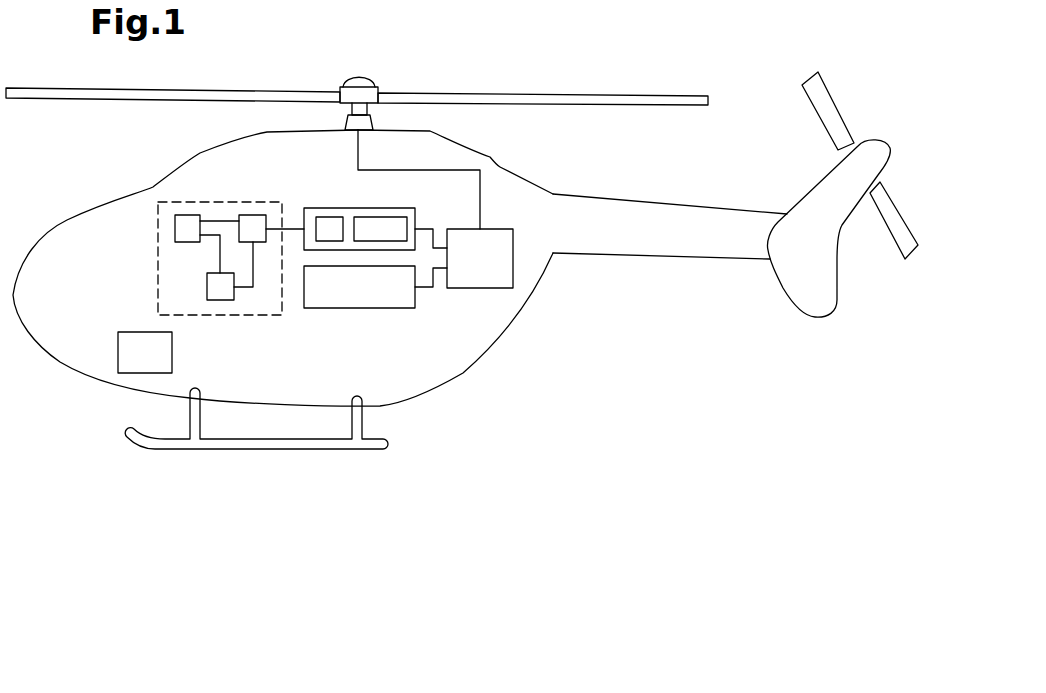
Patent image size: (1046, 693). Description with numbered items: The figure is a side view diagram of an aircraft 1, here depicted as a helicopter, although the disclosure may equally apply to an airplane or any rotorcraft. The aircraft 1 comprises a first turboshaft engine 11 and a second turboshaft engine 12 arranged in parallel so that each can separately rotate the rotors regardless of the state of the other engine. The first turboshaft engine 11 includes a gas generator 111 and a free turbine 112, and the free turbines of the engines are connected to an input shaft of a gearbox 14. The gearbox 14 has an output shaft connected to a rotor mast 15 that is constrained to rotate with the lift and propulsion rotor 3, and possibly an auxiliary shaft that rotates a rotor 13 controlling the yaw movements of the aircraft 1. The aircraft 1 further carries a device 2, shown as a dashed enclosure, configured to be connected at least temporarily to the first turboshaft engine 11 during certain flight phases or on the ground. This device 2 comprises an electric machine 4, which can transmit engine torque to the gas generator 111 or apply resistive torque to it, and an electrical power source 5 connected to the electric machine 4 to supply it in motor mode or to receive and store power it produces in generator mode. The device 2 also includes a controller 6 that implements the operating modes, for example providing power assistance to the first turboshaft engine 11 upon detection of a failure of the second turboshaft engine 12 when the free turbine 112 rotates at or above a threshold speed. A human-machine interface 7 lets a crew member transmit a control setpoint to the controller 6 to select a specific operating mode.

The aircraft 1 is at (523, 318).
The device 2 is at (263, 317).
The lift and propulsion rotor 3 is at (392, 83).
The electric machine 4 is at (248, 222).
The electrical power source 5 is at (218, 292).
The controller 6 is at (182, 227).
The human-machine interface 7 is at (128, 354).
The first turboshaft engine 11 is at (325, 208).
The second turboshaft engine 12 is at (358, 297).
The rotor controlling yaw movements 13 is at (822, 108).
The gearbox 14 is at (487, 278).
The rotor mast 15 is at (482, 193).
The gas generator 111 is at (330, 226).
The free turbine 112 is at (373, 223).